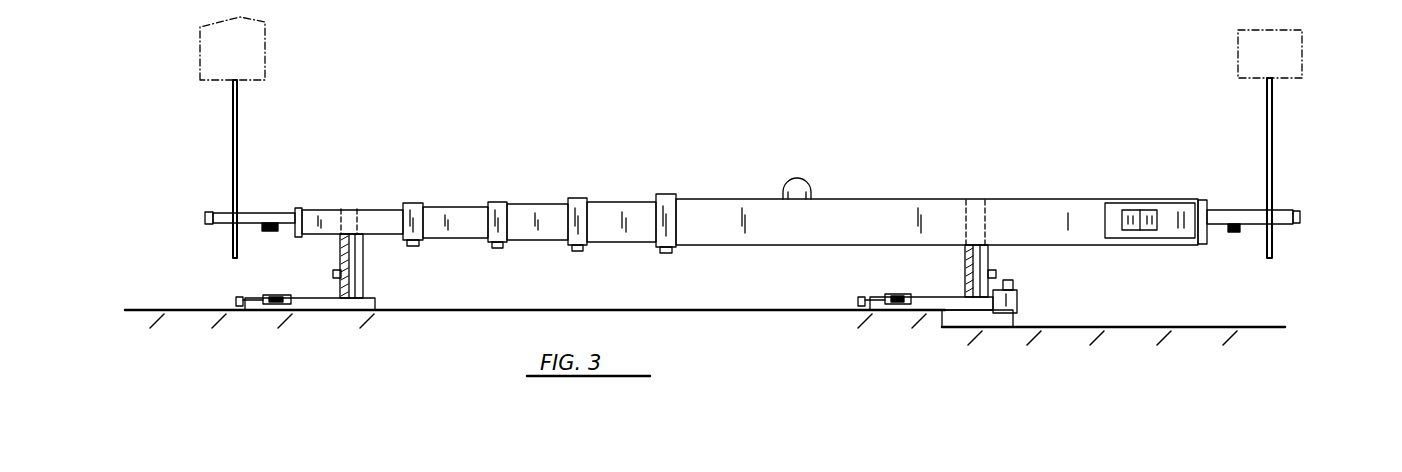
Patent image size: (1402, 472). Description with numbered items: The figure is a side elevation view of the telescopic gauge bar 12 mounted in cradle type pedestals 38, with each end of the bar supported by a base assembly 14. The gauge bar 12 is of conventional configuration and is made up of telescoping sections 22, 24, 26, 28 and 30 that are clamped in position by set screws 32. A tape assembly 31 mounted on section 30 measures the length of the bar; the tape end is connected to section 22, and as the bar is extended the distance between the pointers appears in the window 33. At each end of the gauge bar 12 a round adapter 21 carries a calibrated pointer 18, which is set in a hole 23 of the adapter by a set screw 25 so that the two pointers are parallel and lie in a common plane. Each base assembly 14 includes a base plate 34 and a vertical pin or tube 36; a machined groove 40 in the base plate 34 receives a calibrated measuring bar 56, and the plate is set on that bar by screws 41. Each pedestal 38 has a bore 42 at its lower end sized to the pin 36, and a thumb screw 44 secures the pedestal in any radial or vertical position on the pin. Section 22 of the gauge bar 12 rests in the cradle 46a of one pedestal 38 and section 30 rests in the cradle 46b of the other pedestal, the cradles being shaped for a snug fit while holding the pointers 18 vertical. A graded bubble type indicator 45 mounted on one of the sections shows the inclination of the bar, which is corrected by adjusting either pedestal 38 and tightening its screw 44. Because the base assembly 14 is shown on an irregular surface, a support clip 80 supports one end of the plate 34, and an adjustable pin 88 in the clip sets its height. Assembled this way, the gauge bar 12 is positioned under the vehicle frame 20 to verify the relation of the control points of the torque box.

The gauge bar 12 is at (700, 150).
The base assembly 14 is at (328, 288).
The calibrated pointer 18 is at (233, 97).
The frame 20 is at (200, 36).
The adapter 21 is at (232, 213).
The telescoping section 22 is at (385, 208).
The hole 23 is at (240, 212).
The telescoping section 24 is at (455, 207).
The set screw 25 is at (206, 216).
The telescoping section 26 is at (525, 204).
The telescoping section 28 is at (600, 202).
The telescoping section 30 is at (748, 199).
The tape assembly 31 is at (1177, 242).
The set screw 32 is at (416, 247).
The window 33 is at (1130, 206).
The base plate 34 is at (370, 310).
The vertical pin or tube 36 is at (363, 282).
The pedestal 38 is at (380, 298).
The groove 40 is at (276, 305).
The screw 41 is at (236, 300).
The bore 42 is at (363, 255).
The thumb screw 44 is at (333, 274).
The graded bubble type indicator 45 is at (812, 196).
The cradle 46a is at (350, 232).
The cradle 46b is at (985, 245).
The calibrated measuring bar 56 is at (256, 296).
The support clip 80 is at (1019, 301).
The adjustable pin 88 is at (1015, 318).